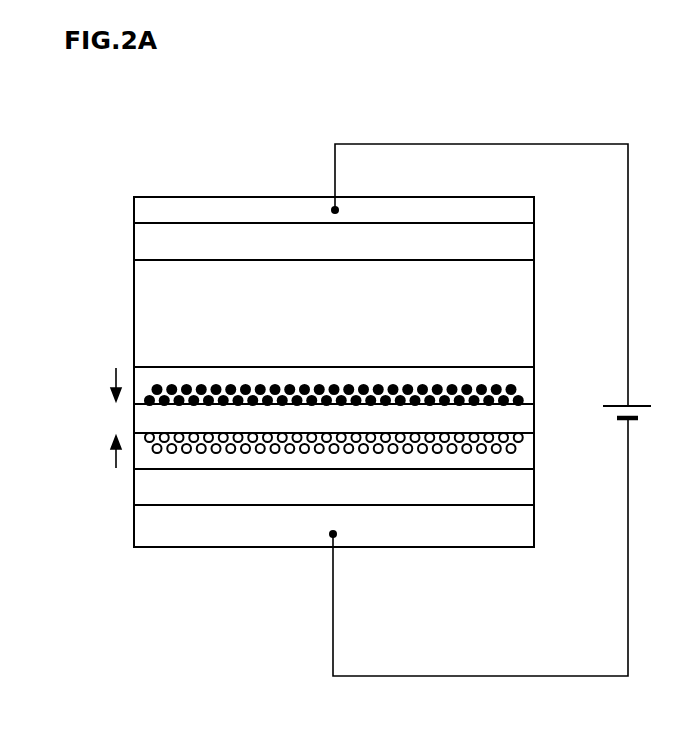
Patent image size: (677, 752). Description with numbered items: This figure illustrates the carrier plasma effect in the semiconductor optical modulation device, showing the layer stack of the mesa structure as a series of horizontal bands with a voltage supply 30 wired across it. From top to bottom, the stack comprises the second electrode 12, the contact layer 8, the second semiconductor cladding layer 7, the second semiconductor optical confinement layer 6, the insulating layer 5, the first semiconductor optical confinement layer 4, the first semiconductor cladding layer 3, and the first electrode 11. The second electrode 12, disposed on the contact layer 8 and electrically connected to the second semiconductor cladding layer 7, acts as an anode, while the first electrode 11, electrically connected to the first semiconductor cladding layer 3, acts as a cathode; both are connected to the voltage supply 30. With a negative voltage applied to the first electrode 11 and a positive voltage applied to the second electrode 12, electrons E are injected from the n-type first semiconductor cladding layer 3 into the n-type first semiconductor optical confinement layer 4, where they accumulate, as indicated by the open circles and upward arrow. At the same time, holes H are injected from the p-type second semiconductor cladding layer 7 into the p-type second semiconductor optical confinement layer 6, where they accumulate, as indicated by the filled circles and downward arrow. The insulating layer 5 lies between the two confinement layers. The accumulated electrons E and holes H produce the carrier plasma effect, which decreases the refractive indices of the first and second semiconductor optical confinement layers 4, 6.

The second electrode 12 is at (520, 212).
The contact layer 8 is at (520, 242).
The second semiconductor cladding layer 7 is at (520, 316).
The second semiconductor optical confinement layer 6 is at (520, 389).
The insulating layer 5 is at (520, 421).
The first semiconductor optical confinement layer 4 is at (520, 452).
The first semiconductor cladding layer 3 is at (520, 487).
The first electrode 11 is at (520, 521).
The voltage supply 30 is at (638, 405).
The holes H is at (319, 384).
The electrons E is at (319, 453).